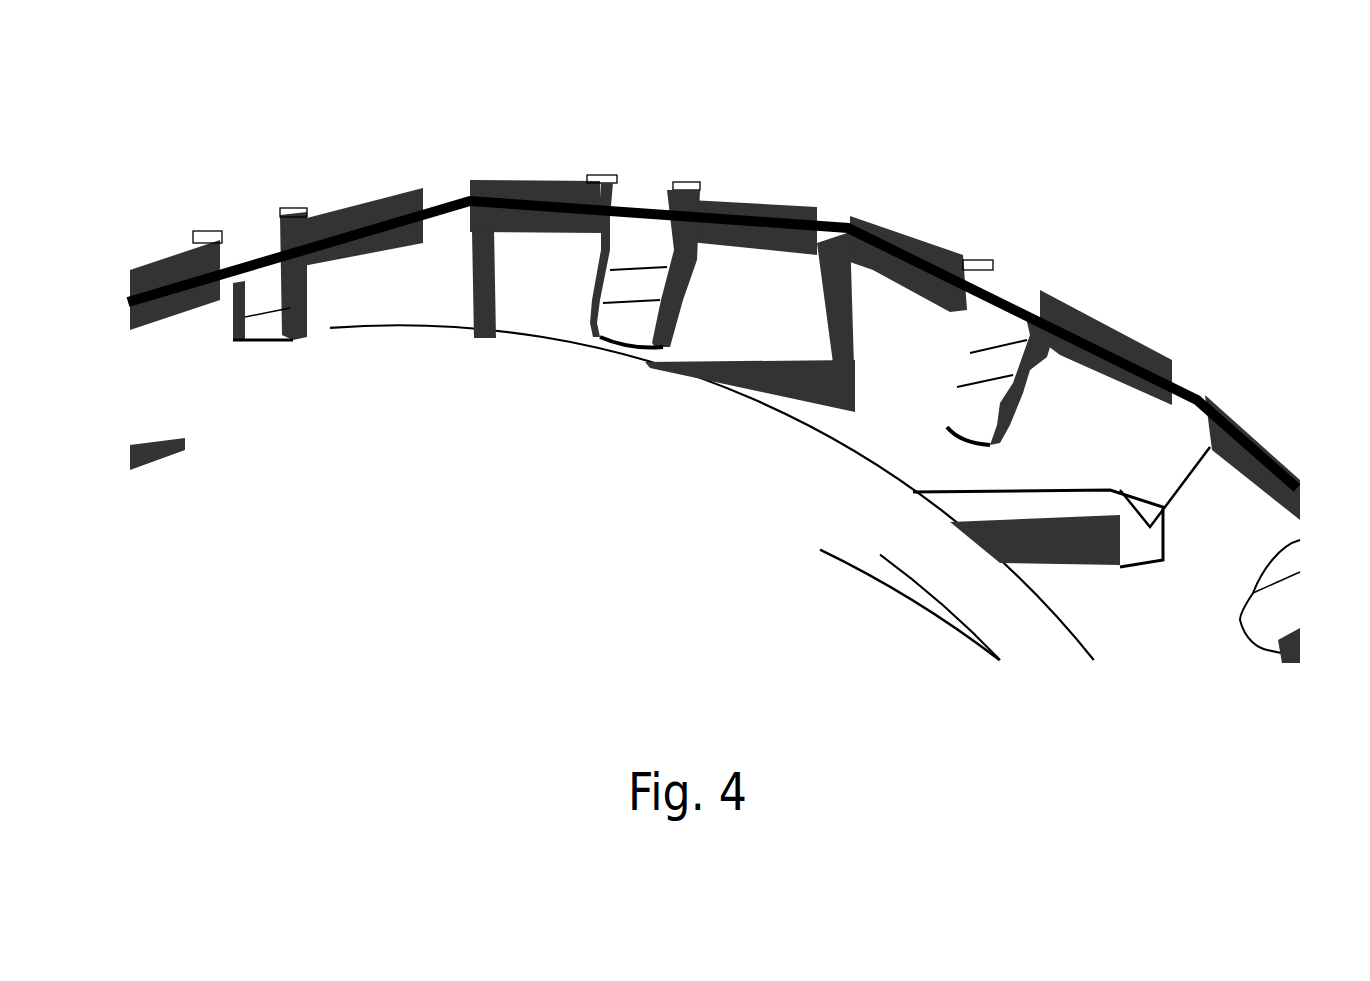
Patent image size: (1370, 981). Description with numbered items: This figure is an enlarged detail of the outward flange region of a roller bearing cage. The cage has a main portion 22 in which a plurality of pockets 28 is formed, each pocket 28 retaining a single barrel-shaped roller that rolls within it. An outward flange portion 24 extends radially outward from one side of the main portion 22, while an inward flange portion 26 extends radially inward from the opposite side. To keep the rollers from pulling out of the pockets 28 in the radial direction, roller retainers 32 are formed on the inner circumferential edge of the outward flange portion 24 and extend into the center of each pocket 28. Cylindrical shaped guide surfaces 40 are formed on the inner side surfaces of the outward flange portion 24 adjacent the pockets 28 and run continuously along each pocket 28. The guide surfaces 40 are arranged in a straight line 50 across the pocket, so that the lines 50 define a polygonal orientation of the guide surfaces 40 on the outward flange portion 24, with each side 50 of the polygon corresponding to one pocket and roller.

The main portion 22 is at (1067, 547).
The outward flange portion 24 is at (871, 158).
The inward flange portion 26 is at (780, 513).
The pocket 28 is at (913, 417).
The roller retainer 32 is at (633, 322).
The guide surface 40 is at (548, 193).
The straight line (polygon side) 50 is at (260, 253).